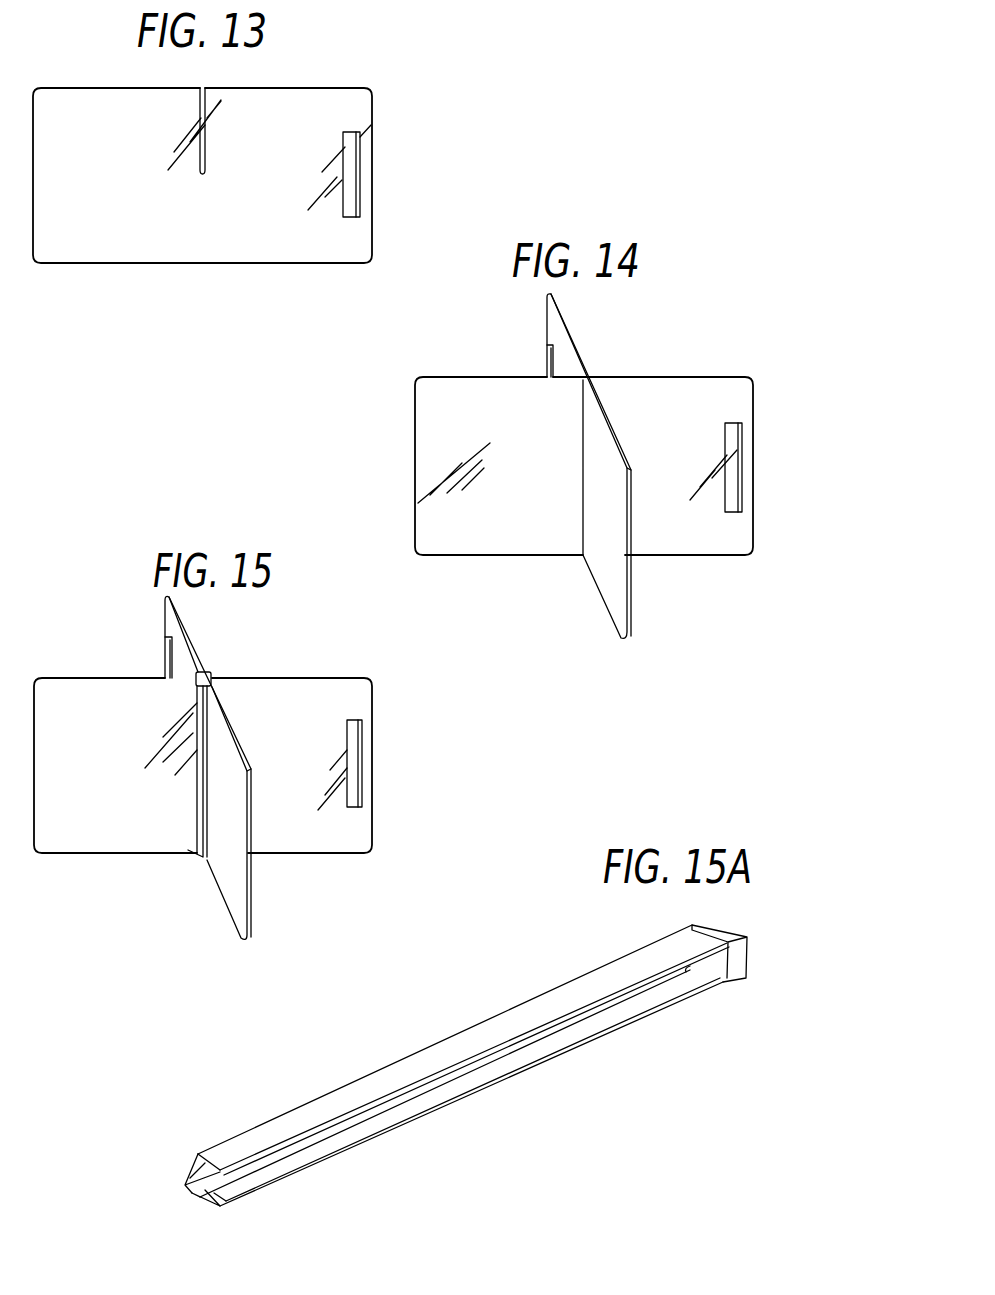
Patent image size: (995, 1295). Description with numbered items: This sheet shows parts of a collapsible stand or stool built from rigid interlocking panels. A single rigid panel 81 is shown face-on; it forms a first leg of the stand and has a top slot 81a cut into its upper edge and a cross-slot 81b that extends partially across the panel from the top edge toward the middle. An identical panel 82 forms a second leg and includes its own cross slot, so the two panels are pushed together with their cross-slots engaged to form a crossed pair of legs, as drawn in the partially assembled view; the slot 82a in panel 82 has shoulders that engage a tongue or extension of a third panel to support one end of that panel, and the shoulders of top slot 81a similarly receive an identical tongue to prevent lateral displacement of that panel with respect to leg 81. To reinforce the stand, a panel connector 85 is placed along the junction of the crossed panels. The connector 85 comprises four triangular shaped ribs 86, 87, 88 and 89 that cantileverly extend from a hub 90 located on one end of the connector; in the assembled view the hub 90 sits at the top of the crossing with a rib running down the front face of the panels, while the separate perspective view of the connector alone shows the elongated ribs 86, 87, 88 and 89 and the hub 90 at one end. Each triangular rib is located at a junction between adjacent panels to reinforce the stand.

In FIG. 13, the rigid panel 81 is at (160, 263).
In FIG. 14, the rigid panel 81 is at (665, 535).
In FIG. 15, the rigid panel 81 is at (288, 690).
In FIG. 13, the top slot 81a is at (360, 167).
In FIG. 14, the top slot 81a is at (742, 473).
In FIG. 15, the top slot 81a is at (362, 762).
In FIG. 13, the cross-slot 81b is at (207, 130).
In FIG. 14, the rigid panel 82 is at (603, 563).
In FIG. 15, the rigid panel 82 is at (250, 868).
In FIG. 14, the slot 82a is at (547, 360).
In FIG. 15, the slot 82a is at (165, 657).
In FIG. 15A, the panel connector 85 is at (475, 1065).
In FIG. 15A, the triangular shaped rib 86 is at (248, 1143).
In FIG. 15A, the triangular shaped rib 87 is at (188, 1182).
In FIG. 15, the triangular shaped rib 88 is at (202, 837).
In FIG. 15A, the triangular shaped rib 88 is at (208, 1203).
In FIG. 15A, the triangular shaped rib 89 is at (240, 1196).
In FIG. 15, the hub 90 is at (210, 672).
In FIG. 15A, the hub 90 is at (730, 932).